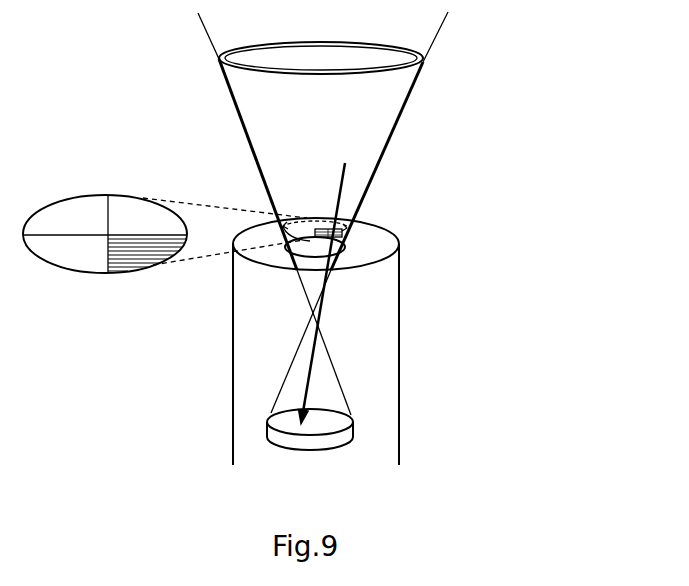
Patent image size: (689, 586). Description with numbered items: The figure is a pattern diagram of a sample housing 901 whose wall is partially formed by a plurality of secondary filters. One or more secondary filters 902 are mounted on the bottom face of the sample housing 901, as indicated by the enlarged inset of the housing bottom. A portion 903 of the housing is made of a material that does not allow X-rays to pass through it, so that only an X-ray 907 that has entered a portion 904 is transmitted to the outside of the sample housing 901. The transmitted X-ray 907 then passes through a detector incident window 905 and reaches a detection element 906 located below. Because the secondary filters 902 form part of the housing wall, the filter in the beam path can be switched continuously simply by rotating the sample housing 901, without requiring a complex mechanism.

The sample housing 901 is at (213, 60).
The secondary filter 902 is at (130, 250).
The X-ray blocking portion 903 is at (350, 232).
The X-ray transmitting portion 904 is at (347, 237).
The detector incident window 905 is at (310, 247).
The detection element 906 is at (330, 423).
The X-ray 907 is at (343, 192).